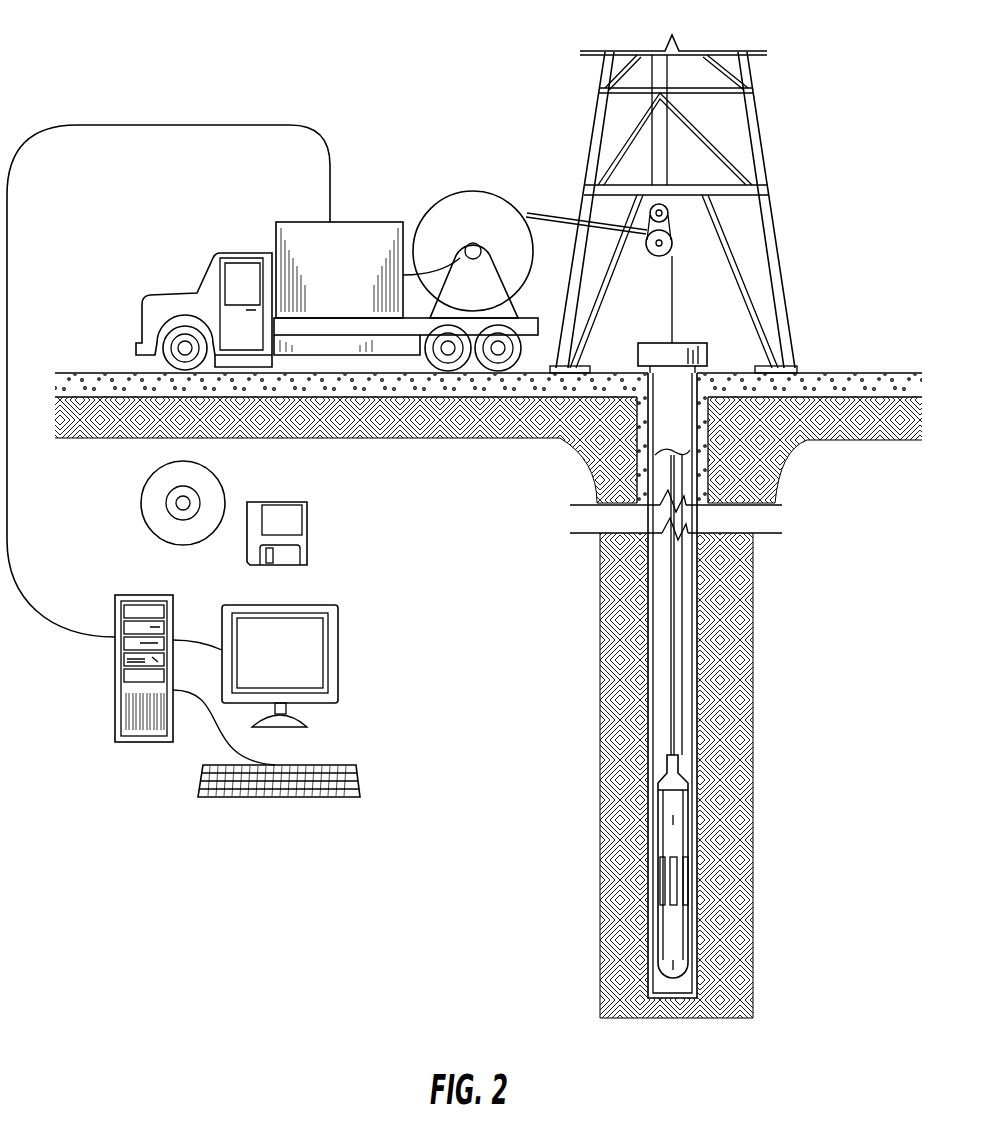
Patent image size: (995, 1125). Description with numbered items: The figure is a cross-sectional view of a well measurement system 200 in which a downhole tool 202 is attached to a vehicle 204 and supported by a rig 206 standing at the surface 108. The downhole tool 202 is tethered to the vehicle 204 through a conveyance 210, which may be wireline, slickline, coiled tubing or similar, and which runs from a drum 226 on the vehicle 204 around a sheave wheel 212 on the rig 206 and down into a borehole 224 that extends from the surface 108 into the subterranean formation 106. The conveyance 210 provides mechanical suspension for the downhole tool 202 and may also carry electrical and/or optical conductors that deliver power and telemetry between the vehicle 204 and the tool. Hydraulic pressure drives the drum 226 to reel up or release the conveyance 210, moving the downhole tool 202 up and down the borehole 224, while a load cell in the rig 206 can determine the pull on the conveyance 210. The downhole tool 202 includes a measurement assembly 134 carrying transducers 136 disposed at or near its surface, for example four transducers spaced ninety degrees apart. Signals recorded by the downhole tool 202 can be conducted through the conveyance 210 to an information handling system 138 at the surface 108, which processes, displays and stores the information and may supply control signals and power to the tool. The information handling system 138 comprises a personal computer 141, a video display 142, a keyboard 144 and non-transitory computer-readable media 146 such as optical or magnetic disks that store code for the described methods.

The well measurement system 200 is at (140, 45).
The vehicle 204 is at (350, 222).
The drum 226 is at (473, 192).
The rig 206 is at (768, 204).
The sheave wheel 212 is at (656, 258).
The surface 108 is at (833, 373).
The borehole 224 is at (770, 487).
The subterranean formation 106 is at (868, 616).
The conveyance 210 is at (670, 625).
The downhole tool 202 is at (640, 838).
The measurement assembly 134 is at (645, 972).
The transducers 136 is at (660, 893).
The information handling system 138 is at (140, 820).
The personal computer 141 is at (143, 595).
The video display 142 is at (282, 605).
The keyboard 144 is at (360, 782).
The non-transitory computer-readable media 146 is at (207, 465).